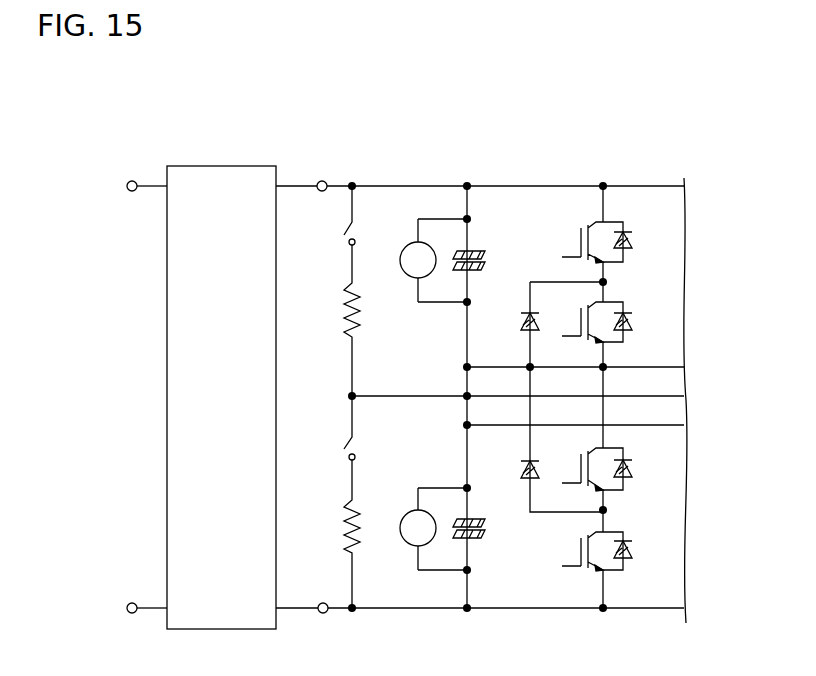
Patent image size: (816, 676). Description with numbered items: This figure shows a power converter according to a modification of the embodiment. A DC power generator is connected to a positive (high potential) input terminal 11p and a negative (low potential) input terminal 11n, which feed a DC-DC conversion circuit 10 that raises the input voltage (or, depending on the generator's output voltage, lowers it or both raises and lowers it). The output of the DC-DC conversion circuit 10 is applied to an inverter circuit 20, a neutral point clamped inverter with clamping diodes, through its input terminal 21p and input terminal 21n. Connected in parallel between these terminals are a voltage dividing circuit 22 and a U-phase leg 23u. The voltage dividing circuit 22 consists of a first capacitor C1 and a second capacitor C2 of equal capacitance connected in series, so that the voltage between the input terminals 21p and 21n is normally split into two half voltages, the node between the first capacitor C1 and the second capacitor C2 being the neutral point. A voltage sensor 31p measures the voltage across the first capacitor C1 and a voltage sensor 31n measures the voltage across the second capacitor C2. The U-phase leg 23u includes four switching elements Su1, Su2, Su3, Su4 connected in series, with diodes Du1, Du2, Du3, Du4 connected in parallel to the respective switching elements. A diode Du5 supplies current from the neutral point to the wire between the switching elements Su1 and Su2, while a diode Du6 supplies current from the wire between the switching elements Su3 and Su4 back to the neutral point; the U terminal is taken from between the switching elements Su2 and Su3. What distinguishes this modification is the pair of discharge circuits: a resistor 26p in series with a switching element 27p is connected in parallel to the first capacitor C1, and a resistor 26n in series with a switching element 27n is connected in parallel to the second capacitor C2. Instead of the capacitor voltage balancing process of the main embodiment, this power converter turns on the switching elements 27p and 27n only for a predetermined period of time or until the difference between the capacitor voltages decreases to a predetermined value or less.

The DC-DC conversion circuit 10 is at (230, 166).
The input terminal 11p is at (131, 181).
The input terminal 11n is at (131, 603).
The inverter circuit 20 is at (684, 150).
The input terminal 21p is at (322, 181).
The input terminal 21n is at (323, 613).
The voltage dividing circuit 22 is at (443, 444).
The U-phase leg 23u is at (580, 426).
The resistor 26p is at (347, 338).
The resistor 26n is at (347, 556).
The switching element 27p is at (343, 233).
The switching element 27n is at (343, 448).
The voltage sensor 31p is at (405, 276).
The voltage sensor 31n is at (405, 544).
The first capacitor C1 is at (484, 251).
The second capacitor C2 is at (485, 520).
The switching element Su1 is at (578, 232).
The switching element Su2 is at (578, 322).
The switching element Su3 is at (578, 458).
The switching element Su4 is at (578, 543).
The diode Du1 is at (629, 238).
The diode Du2 is at (630, 322).
The diode Du3 is at (630, 466).
The diode Du4 is at (631, 548).
The diode Du5 is at (522, 320).
The diode Du6 is at (522, 464).